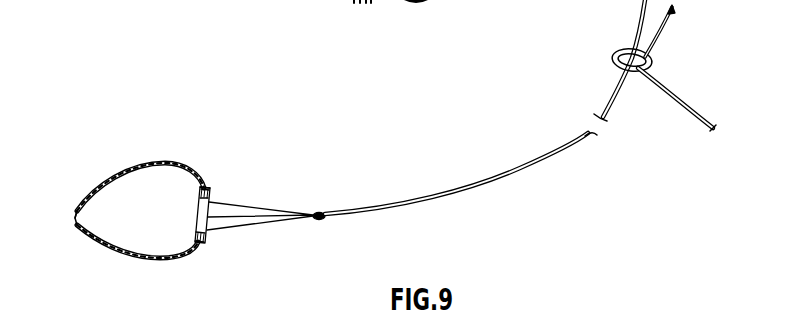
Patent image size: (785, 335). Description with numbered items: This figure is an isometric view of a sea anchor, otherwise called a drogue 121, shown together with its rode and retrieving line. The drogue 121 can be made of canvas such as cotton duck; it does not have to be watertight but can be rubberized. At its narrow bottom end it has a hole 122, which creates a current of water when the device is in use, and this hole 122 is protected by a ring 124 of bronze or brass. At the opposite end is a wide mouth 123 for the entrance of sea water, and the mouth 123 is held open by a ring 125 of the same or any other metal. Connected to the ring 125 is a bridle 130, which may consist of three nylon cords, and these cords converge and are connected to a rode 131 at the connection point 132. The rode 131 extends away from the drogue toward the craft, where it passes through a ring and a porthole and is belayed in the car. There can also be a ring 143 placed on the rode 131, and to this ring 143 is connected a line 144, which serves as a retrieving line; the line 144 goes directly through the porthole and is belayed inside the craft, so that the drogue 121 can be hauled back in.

The sea anchor or drogue 121 is at (165, 161).
The hole 122 is at (78, 222).
The wide mouth 123 is at (199, 208).
The ring 124 is at (76, 215).
The ring 125 is at (210, 187).
The bridle 130 is at (262, 208).
The rode 131 is at (535, 166).
The connection point 132 is at (323, 212).
The ring 143 is at (650, 62).
The line 144 is at (683, 108).